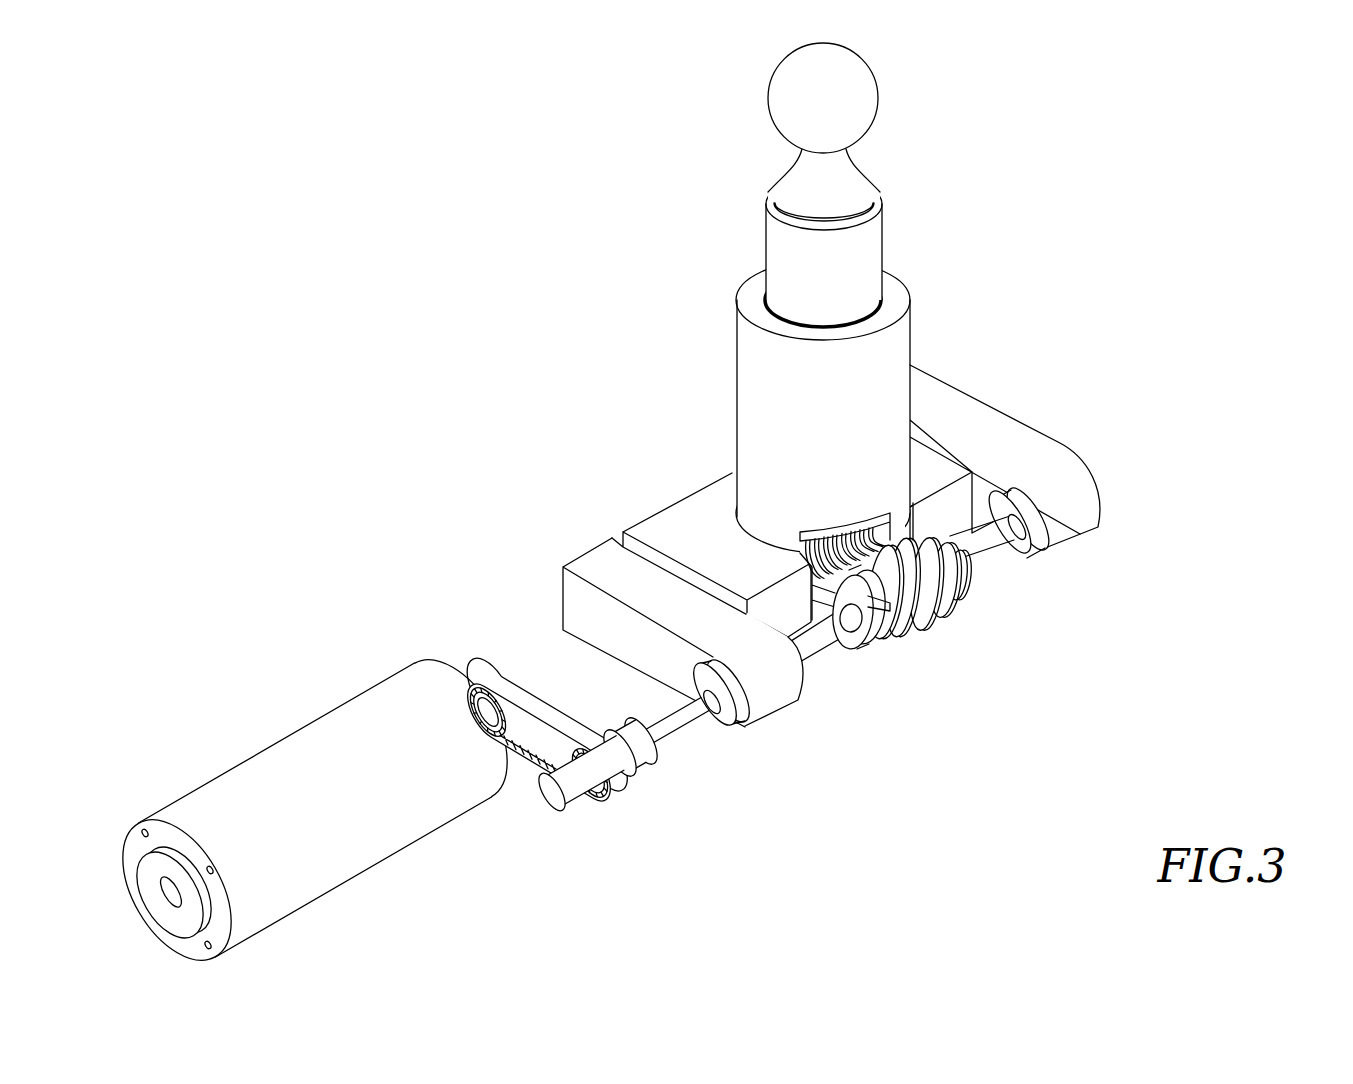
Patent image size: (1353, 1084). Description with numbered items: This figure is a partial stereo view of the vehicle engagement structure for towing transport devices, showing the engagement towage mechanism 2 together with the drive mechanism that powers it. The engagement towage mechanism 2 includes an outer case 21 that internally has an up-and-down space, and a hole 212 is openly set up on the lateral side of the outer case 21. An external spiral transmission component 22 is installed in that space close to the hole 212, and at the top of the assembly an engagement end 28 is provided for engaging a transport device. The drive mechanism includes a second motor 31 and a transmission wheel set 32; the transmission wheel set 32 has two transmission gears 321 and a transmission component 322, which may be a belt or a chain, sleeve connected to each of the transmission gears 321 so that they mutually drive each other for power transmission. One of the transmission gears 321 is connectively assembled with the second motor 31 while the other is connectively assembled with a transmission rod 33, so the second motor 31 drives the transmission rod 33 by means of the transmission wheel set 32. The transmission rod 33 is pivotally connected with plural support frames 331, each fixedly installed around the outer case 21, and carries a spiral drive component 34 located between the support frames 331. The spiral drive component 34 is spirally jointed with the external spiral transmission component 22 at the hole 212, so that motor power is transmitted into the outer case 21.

The engagement towage mechanism 2 is at (950, 290).
The outer case 21 is at (886, 358).
The external spiral transmission component 22 is at (900, 527).
The hole 212 is at (903, 530).
The engagement end 28 is at (850, 97).
The second motor 31 is at (317, 728).
The transmission wheel set 32 is at (502, 644).
The transmission gears 321 is at (463, 683).
The transmission component 322 is at (517, 683).
The transmission rod 33 is at (817, 653).
The support frames 331 is at (1086, 512).
The spiral drive component 34 is at (955, 603).